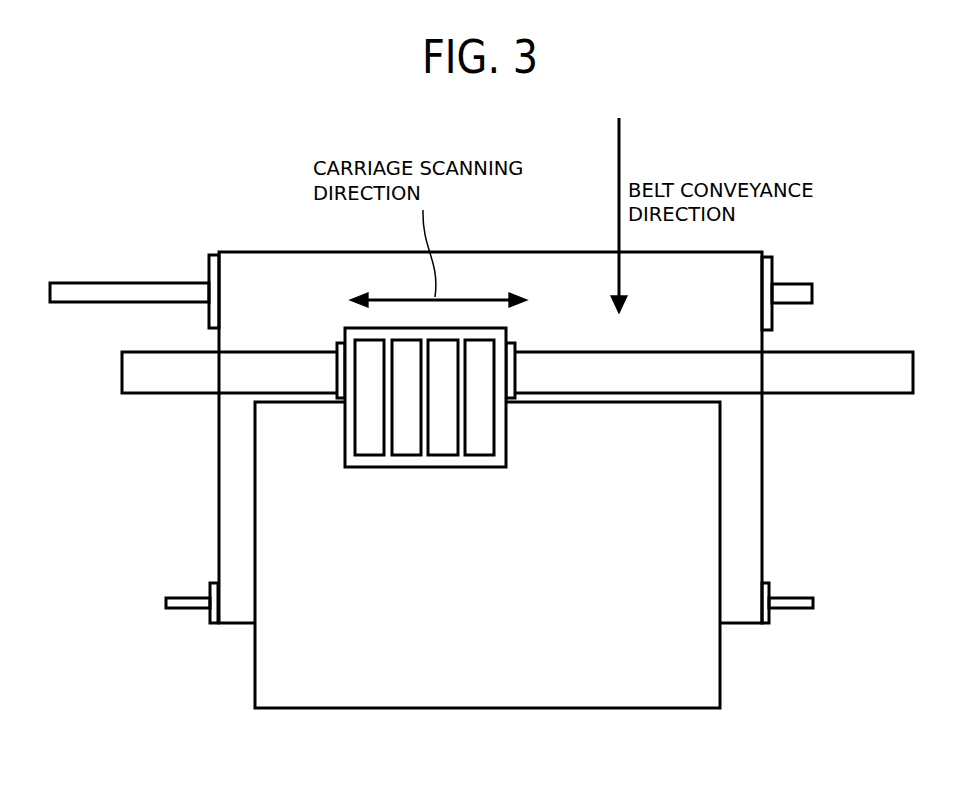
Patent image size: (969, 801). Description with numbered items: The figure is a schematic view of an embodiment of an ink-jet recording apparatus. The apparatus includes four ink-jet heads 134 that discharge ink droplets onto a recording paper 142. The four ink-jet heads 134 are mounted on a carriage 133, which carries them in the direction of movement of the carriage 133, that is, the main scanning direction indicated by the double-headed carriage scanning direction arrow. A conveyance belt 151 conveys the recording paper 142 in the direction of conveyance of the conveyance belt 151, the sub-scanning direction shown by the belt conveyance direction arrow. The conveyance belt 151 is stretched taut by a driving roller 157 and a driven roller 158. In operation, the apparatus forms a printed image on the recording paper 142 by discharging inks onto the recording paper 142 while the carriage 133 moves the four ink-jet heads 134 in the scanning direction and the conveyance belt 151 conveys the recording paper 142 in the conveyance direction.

The conveyance belt 151 is at (275, 263).
The driving roller 157 is at (213, 257).
The driven roller 158 is at (213, 622).
The recording paper 142 is at (672, 700).
The carriage 133 is at (353, 460).
The ink-jet heads 134 is at (372, 442).